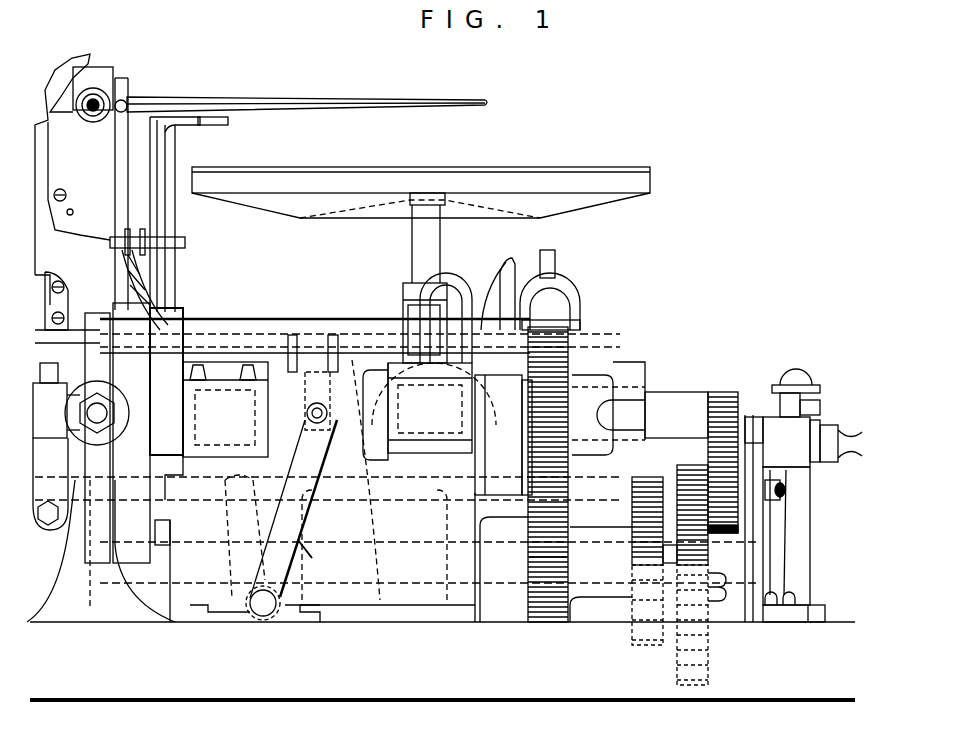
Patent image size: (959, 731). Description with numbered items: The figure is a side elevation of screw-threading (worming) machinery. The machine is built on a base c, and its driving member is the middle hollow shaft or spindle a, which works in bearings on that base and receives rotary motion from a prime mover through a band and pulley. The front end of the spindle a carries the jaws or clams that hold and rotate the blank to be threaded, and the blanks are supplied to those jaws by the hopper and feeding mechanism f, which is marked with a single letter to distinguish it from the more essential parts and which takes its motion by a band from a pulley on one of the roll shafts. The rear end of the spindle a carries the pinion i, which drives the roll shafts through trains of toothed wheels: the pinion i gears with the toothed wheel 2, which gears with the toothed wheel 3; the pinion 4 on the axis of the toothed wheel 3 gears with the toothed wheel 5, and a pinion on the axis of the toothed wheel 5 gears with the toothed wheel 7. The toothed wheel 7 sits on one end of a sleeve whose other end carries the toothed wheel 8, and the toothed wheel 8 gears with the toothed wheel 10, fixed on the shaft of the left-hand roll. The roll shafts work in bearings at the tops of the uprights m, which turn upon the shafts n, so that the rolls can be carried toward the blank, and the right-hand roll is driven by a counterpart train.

The hopper and feeding mechanism f is at (383, 335).
The toothed wheel 10 is at (570, 362).
The pinion i is at (720, 392).
The hollow shaft or spindle a is at (676, 415).
The toothed wheel 2 is at (803, 442).
The toothed wheel 7 is at (653, 480).
The pinion 4 is at (692, 472).
The toothed wheel 3 is at (723, 539).
The toothed wheel 8 is at (528, 557).
The toothed wheel 5 is at (723, 591).
The uprights m is at (237, 491).
The shafts n is at (411, 557).
The base c is at (291, 543).